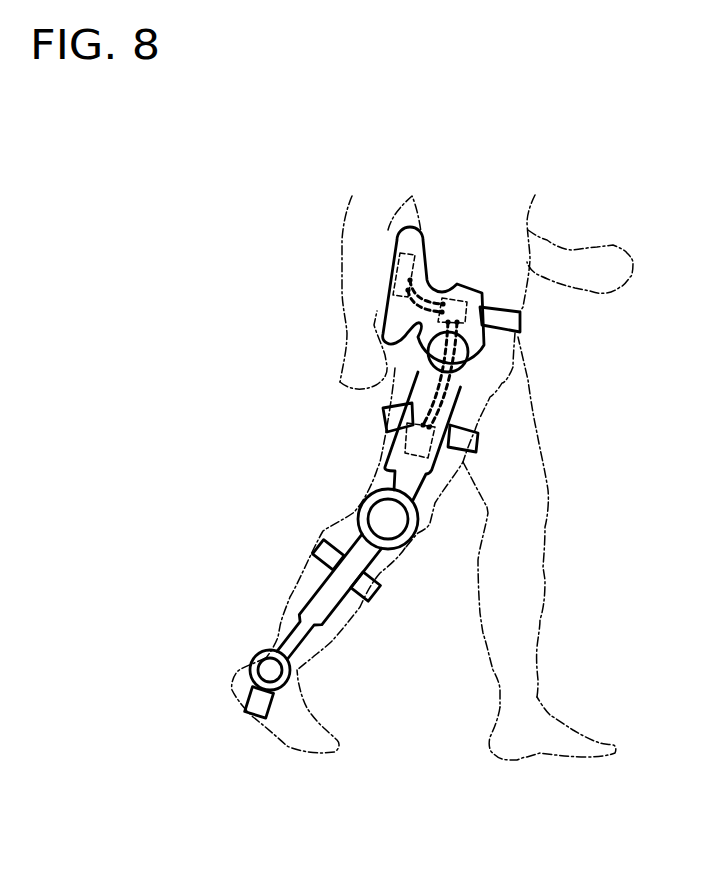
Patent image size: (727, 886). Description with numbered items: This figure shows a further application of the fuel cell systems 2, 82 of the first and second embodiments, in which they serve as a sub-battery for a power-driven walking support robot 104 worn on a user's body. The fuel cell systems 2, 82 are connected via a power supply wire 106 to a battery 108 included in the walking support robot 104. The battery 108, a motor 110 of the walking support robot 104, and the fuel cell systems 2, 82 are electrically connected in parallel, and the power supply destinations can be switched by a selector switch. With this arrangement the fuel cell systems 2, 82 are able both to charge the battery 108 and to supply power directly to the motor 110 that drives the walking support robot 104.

The fuel cell system 2 is at (397, 258).
The fuel cell system 82 is at (321, 275).
The power-driven walking support robot 104 is at (397, 486).
The power supply wire 106 is at (432, 284).
The battery 108 is at (488, 321).
The motor 110 is at (430, 453).